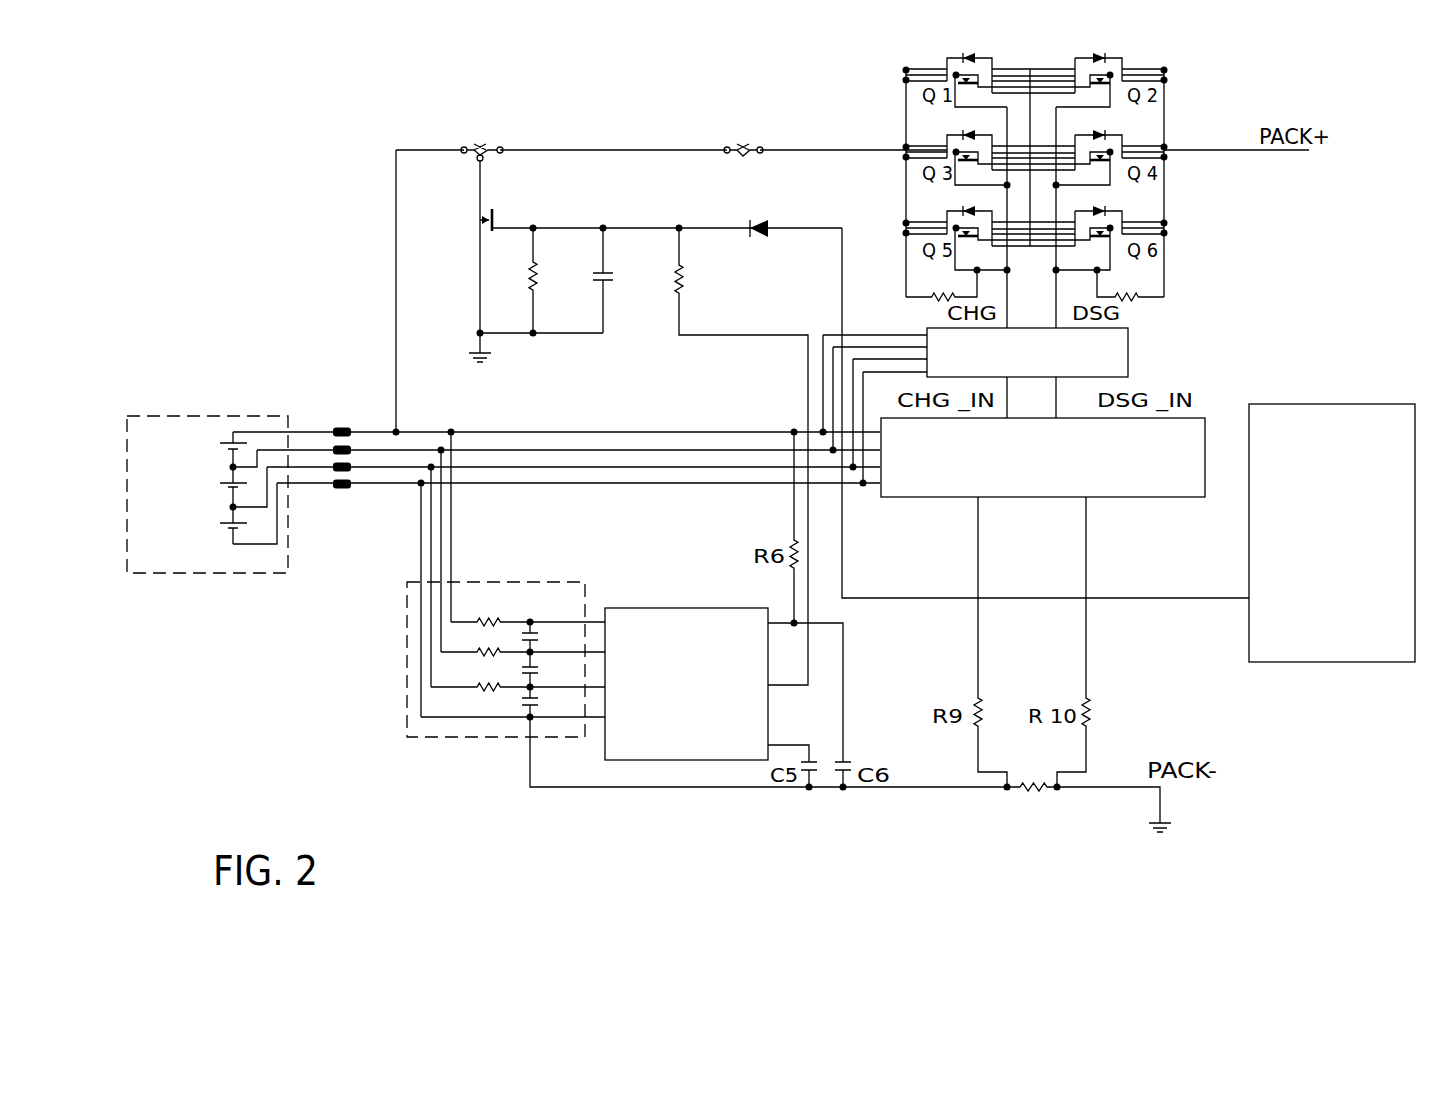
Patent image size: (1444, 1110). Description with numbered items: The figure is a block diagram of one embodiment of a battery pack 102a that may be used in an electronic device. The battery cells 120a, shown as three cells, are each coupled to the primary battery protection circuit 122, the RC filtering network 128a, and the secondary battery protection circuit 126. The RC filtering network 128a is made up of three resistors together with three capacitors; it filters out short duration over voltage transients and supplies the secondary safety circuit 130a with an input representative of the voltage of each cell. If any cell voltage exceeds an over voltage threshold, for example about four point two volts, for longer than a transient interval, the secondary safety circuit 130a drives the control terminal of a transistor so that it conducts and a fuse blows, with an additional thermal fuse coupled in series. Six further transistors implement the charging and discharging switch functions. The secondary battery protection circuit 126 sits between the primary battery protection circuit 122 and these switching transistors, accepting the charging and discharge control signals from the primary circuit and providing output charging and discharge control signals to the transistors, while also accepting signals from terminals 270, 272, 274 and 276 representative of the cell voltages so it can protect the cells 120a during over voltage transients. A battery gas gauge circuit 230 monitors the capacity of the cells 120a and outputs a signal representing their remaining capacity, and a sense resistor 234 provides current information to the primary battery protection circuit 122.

The battery pack 102a is at (336, 210).
The battery cells 120a is at (183, 413).
The terminal 270 is at (340, 427).
The terminal 272 is at (352, 448).
The terminal 274 is at (352, 470).
The terminal 276 is at (343, 490).
The RC filtering network 128a is at (407, 672).
The secondary safety circuit 130a is at (683, 607).
The secondary battery protection circuit 126 is at (1130, 352).
The primary battery protection circuit 122 is at (1133, 498).
The battery gas gauge circuit 230 is at (1320, 663).
The sense resistor 234 is at (1021, 791).